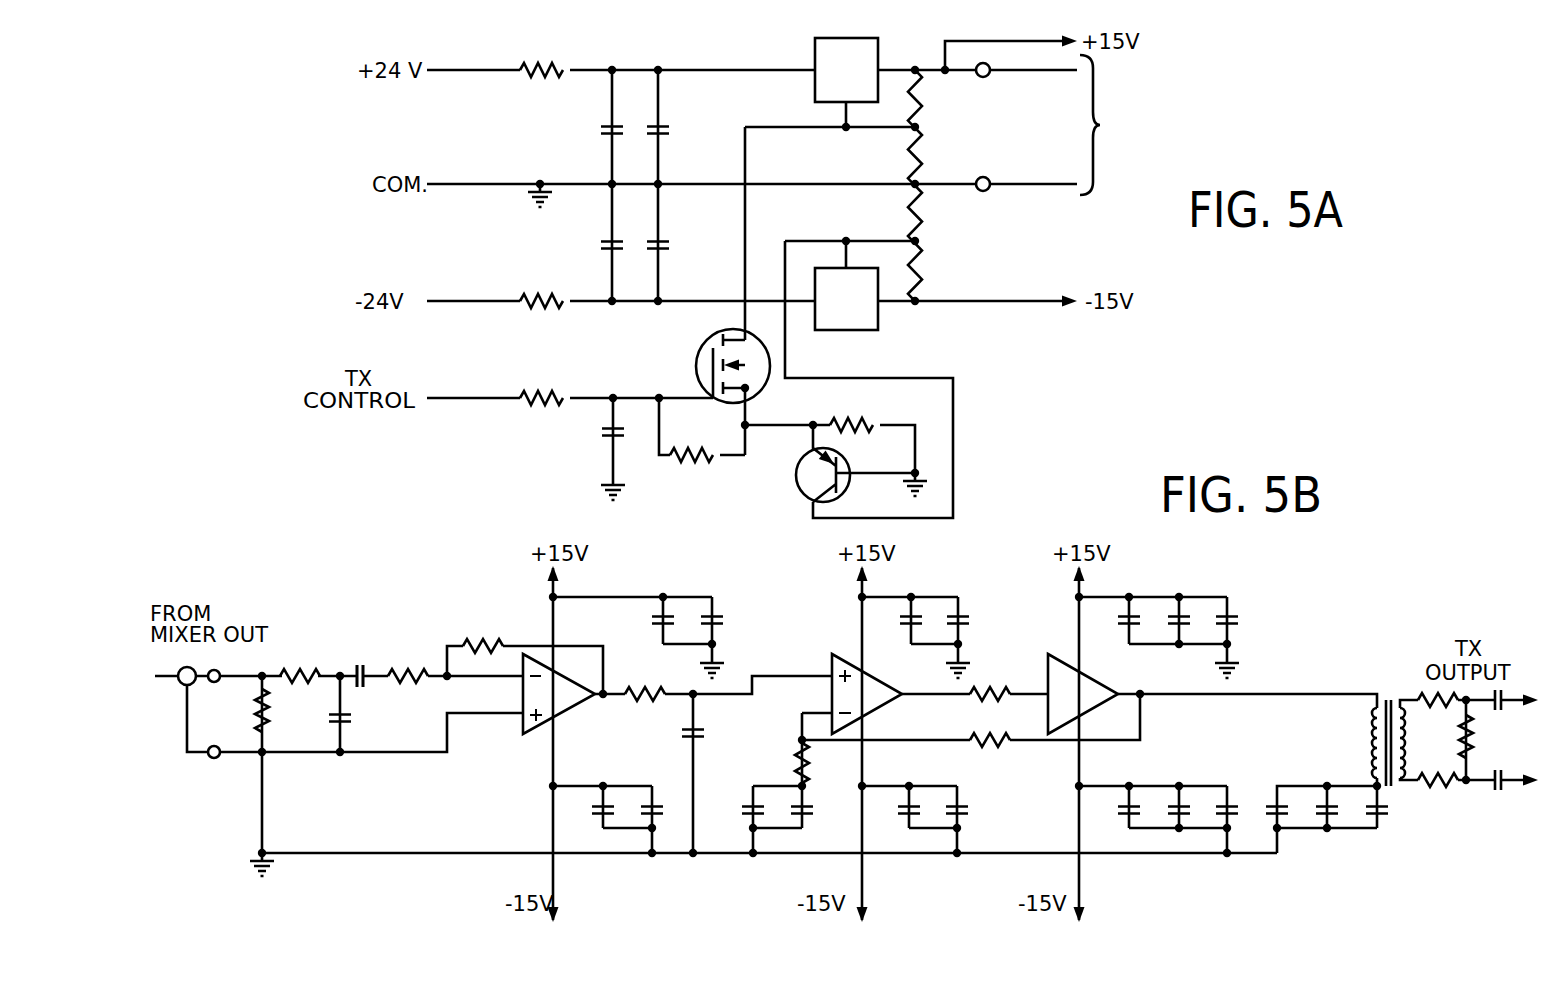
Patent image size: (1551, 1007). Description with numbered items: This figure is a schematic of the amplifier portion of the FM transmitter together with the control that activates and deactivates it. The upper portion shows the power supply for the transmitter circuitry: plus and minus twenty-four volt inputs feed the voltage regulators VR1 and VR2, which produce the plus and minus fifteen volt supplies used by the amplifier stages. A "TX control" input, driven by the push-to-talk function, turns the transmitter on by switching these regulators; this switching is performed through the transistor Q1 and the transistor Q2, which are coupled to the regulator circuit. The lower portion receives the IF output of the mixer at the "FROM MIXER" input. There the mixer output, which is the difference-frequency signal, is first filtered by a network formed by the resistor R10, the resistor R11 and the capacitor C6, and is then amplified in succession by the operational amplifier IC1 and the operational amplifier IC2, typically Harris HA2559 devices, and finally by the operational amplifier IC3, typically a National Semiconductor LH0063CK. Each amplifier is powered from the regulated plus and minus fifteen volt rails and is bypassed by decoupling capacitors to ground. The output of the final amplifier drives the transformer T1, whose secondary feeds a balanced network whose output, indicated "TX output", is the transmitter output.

In FIG. 5A, the positive voltage regulator VR1 is at (846, 84).
In FIG. 5A, the negative voltage regulator VR2 is at (846, 283).
In FIG. 5A, the field effect transistor Q1 is at (695, 351).
In FIG. 5A, the transistor Q2 is at (794, 486).
In FIG. 5B, the resistor R10 is at (258, 713).
In FIG. 5B, the resistor R11 is at (283, 671).
In FIG. 5B, the capacitor C6 is at (352, 667).
In FIG. 5B, the operational amplifier IC1 is at (559, 694).
In FIG. 5B, the operational amplifier IC2 is at (867, 694).
In FIG. 5B, the operational amplifier IC3 is at (1083, 694).
In FIG. 5B, the output transformer T1 is at (1364, 735).